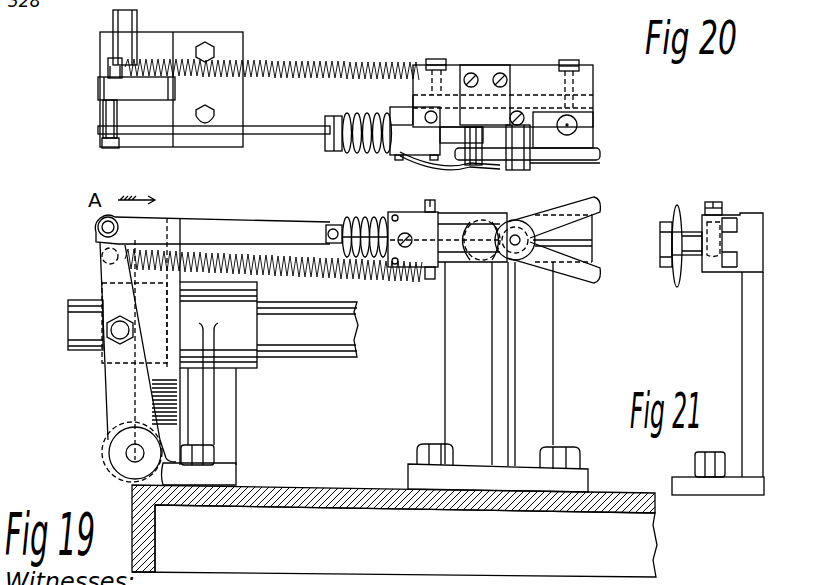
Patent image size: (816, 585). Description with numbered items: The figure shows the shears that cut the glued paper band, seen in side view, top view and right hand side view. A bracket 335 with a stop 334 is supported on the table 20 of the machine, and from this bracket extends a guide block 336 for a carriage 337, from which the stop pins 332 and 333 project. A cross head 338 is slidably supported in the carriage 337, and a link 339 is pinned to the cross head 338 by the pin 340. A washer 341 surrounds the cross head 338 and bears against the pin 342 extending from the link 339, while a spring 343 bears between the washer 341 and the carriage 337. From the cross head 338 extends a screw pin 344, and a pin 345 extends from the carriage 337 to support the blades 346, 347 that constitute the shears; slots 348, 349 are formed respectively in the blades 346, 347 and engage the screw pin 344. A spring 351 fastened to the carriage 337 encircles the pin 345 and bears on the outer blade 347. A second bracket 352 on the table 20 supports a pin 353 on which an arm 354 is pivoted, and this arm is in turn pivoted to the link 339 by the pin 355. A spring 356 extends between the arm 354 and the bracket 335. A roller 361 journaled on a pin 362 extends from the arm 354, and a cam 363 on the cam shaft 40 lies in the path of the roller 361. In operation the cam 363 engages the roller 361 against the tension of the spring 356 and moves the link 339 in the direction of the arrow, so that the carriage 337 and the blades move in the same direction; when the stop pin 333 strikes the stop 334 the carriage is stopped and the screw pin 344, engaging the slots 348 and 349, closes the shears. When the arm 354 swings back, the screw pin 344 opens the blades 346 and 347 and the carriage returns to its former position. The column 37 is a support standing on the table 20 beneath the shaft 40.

In FIG. 19, the table 20 is at (372, 504).
In FIG. 19, the support standard 37 is at (230, 407).
In FIG. 19, the cam shaft 40 is at (68, 326).
In FIG. 20, the stop pin 332 is at (553, 136).
In FIG. 19, the stop pin 332 is at (520, 221).
In FIG. 20, the stop pin 333 is at (418, 121).
In FIG. 19, the stop pin 333 is at (425, 205).
In FIG. 20, the stop 334 is at (502, 116).
In FIG. 20, the bracket 335 is at (516, 54).
In FIG. 19, the bracket 335 is at (554, 349).
In FIG. 21, the bracket 335 is at (743, 272).
In FIG. 20, the guide block 336 is at (593, 96).
In FIG. 19, the guide block 336 is at (592, 243).
In FIG. 21, the guide block 336 is at (728, 222).
In FIG. 20, the carriage 337 is at (396, 122).
In FIG. 21, the carriage 337 is at (718, 273).
In FIG. 20, the cross head 338 is at (398, 107).
In FIG. 19, the cross head 338 is at (436, 256).
In FIG. 20, the link 339 is at (305, 126).
In FIG. 19, the link 339 is at (297, 232).
In FIG. 19, the pin 340 is at (418, 241).
In FIG. 20, the washer 341 is at (348, 154).
In FIG. 19, the washer 341 is at (346, 233).
In FIG. 20, the pin 342 is at (334, 116).
In FIG. 19, the pin 342 is at (327, 235).
In FIG. 19, the spring 343 is at (355, 213).
In FIG. 20, the screw pin 344 is at (474, 166).
In FIG. 19, the screw pin 344 is at (470, 262).
In FIG. 20, the pin 345 is at (528, 166).
In FIG. 20, the blade 346 is at (600, 152).
In FIG. 19, the blade 346 is at (596, 204).
In FIG. 21, the blade 346 is at (688, 214).
In FIG. 20, the blade 347 is at (568, 161).
In FIG. 19, the blade 347 is at (596, 282).
In FIG. 21, the blade 347 is at (678, 287).
In FIG. 19, the slot 348 is at (490, 262).
In FIG. 19, the slot 349 is at (492, 228).
In FIG. 20, the spring 351 is at (452, 164).
In FIG. 20, the bracket 352 is at (252, 24).
In FIG. 19, the bracket 352 is at (232, 477).
In FIG. 19, the pin 353 is at (126, 456).
In FIG. 20, the arm 354 is at (98, 88).
In FIG. 19, the arm 354 is at (107, 413).
In FIG. 20, the pin 355 is at (110, 148).
In FIG. 19, the pin 355 is at (98, 229).
In FIG. 20, the spring 356 is at (272, 59).
In FIG. 19, the spring 356 is at (262, 274).
In FIG. 20, the roller 361 is at (112, 22).
In FIG. 19, the pin 362 is at (112, 342).
In FIG. 19, the cam 363 is at (128, 272).